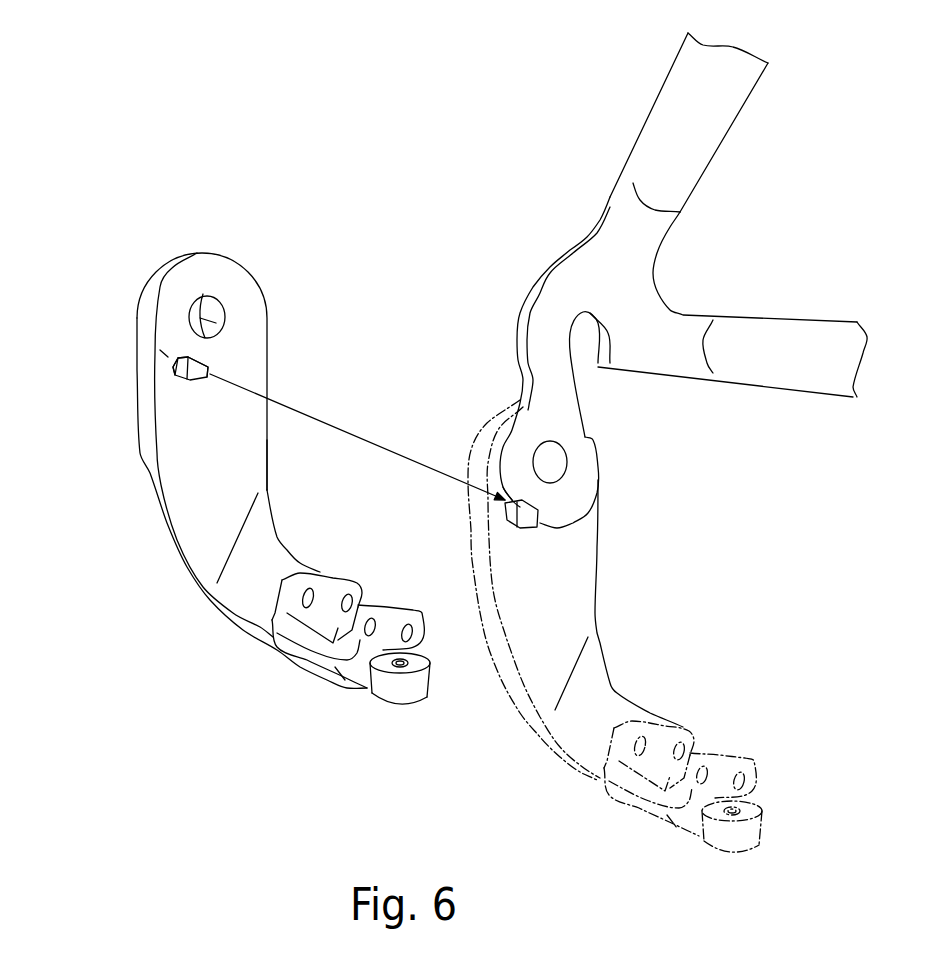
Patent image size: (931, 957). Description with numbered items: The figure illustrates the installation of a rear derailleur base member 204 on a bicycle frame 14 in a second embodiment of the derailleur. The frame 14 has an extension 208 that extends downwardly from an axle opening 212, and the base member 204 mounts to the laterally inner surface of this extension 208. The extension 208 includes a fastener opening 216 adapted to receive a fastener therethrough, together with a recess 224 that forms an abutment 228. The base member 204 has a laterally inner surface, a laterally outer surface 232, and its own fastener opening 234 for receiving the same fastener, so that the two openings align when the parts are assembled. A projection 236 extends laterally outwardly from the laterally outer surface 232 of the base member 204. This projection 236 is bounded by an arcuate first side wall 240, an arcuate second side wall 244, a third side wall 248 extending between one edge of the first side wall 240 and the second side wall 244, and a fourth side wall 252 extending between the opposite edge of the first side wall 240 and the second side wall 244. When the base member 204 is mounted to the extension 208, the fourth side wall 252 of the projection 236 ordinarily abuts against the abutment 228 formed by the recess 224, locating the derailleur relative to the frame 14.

The frame 14 is at (673, 105).
The base member 204 is at (227, 593).
The extension 208 is at (518, 400).
The axle opening 212 is at (622, 470).
The fastener opening 216 is at (552, 462).
The recess 224 is at (513, 490).
The abutment 228 is at (542, 522).
The laterally outer surface 232 is at (227, 472).
The fastener opening 234 is at (205, 310).
The projection 236 is at (168, 357).
The first side wall 240 is at (192, 360).
The second side wall 244 is at (185, 382).
The third side wall 248 is at (173, 366).
The fourth side wall 252 is at (207, 377).